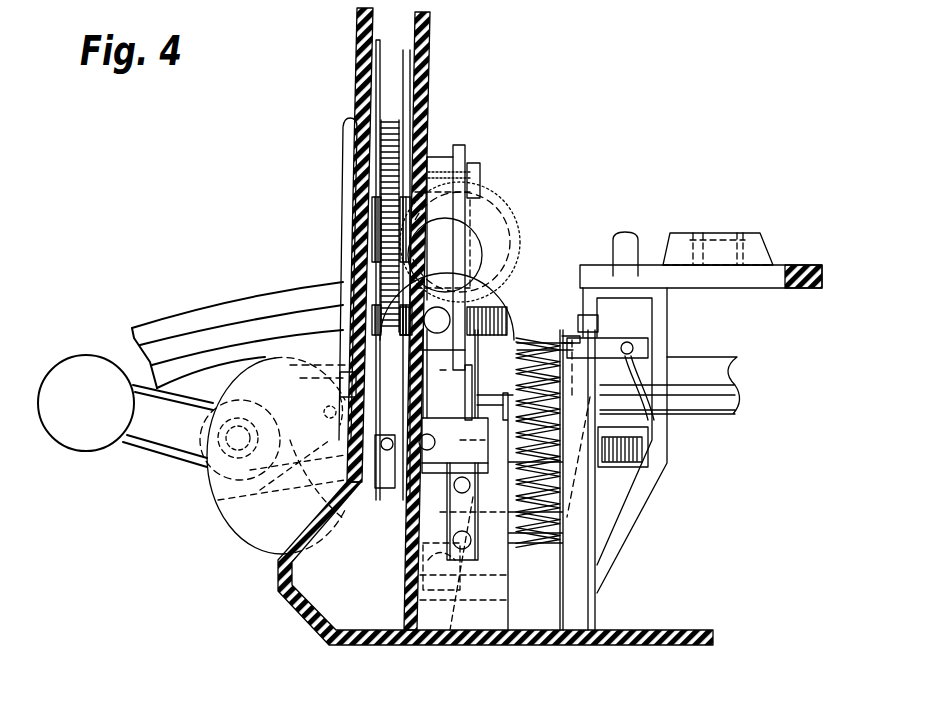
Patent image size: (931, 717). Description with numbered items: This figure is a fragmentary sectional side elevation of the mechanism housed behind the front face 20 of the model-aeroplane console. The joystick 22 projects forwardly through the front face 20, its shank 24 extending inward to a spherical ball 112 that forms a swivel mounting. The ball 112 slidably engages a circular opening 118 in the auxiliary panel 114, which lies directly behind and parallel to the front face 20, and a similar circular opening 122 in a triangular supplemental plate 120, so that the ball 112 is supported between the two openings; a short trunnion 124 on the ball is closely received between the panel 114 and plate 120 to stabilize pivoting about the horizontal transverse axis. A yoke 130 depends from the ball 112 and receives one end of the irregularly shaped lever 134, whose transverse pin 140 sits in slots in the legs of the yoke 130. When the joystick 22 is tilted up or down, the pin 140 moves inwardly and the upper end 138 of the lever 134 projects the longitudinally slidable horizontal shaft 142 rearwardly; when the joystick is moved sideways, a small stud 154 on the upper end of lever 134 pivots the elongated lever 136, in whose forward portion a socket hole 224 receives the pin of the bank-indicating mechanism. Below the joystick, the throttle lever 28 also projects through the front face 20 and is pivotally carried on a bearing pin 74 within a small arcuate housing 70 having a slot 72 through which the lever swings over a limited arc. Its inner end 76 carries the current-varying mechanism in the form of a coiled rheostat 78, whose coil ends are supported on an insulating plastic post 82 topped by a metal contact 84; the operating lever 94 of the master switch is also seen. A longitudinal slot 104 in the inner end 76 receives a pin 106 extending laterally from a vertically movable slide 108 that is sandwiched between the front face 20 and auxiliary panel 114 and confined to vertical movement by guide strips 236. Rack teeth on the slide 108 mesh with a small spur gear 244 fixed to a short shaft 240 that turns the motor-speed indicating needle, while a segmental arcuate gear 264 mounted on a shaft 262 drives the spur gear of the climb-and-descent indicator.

The front face 20 is at (357, 70).
The joystick 22 is at (213, 297).
The shank 24 is at (175, 308).
The throttle lever 28 is at (160, 456).
The arcuate housing 70 is at (243, 540).
The slot 72 is at (212, 496).
The bearing pin 74 is at (226, 437).
The inner end 76 is at (400, 560).
The coiled rheostat 78 is at (524, 542).
The plastic post 82 is at (598, 603).
The metal contact 84 is at (652, 345).
The operating lever 94 is at (250, 544).
The slot 104 is at (325, 412).
The pin 106 is at (392, 490).
The vertically movable slide 108 is at (380, 120).
The spherical ball 112 is at (486, 306).
The auxiliary panel 114 is at (430, 34).
The circular opening 118 is at (348, 383).
The supplemental plate 120 is at (462, 145).
The circular opening 122 is at (521, 216).
The trunnion 124 is at (492, 290).
The yoke 130 is at (403, 585).
The irregular lever 134 is at (645, 507).
The elongated lever 136 is at (788, 266).
The upper end 138 is at (585, 322).
The transverse pin 140 is at (442, 647).
The horizontal pivot member 142 is at (698, 420).
The stud 154 is at (626, 233).
The socket hole 224 is at (714, 238).
The guide strips 236 is at (378, 42).
The short shaft 240 is at (345, 212).
The spur gear 244 is at (356, 266).
The shaft 262 is at (503, 202).
The segmental arcuate gear 264 is at (492, 185).